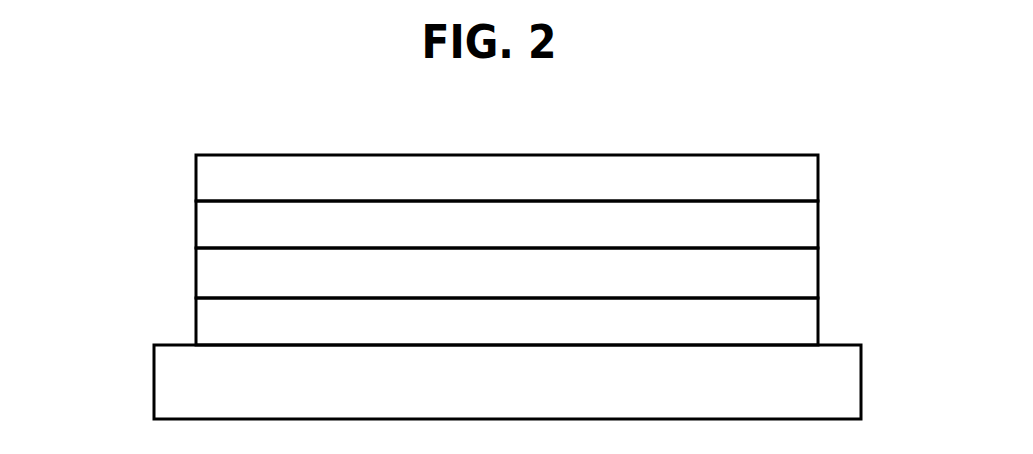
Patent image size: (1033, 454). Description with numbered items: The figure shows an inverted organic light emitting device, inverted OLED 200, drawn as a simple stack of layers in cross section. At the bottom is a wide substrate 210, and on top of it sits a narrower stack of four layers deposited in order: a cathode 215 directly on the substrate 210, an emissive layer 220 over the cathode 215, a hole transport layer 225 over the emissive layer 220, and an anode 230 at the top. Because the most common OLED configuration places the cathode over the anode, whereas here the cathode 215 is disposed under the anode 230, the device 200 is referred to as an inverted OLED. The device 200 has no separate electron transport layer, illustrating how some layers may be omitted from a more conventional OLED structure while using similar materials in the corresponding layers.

The inverted OLED 200 is at (615, 124).
The substrate 210 is at (154, 382).
The cathode 215 is at (196, 322).
The emissive layer 220 is at (196, 274).
The hole transport layer 225 is at (196, 226).
The anode 230 is at (196, 177).